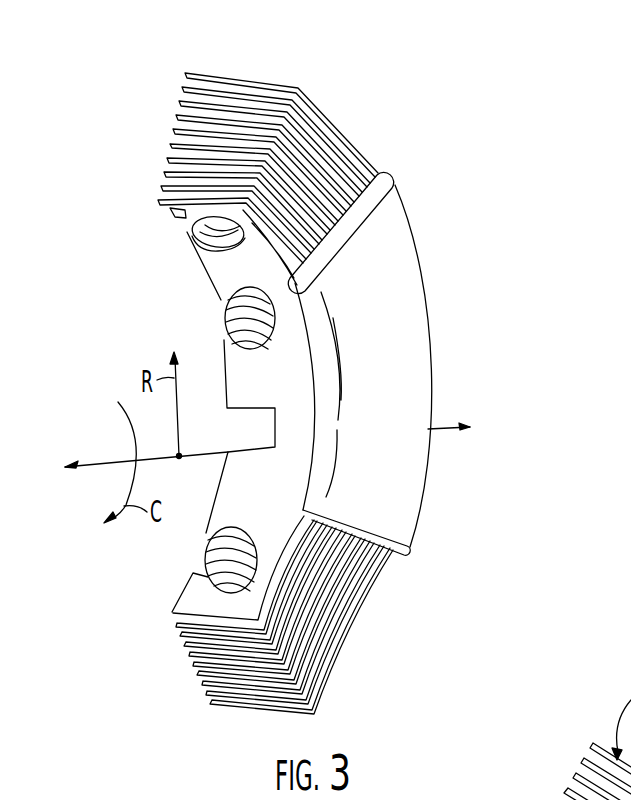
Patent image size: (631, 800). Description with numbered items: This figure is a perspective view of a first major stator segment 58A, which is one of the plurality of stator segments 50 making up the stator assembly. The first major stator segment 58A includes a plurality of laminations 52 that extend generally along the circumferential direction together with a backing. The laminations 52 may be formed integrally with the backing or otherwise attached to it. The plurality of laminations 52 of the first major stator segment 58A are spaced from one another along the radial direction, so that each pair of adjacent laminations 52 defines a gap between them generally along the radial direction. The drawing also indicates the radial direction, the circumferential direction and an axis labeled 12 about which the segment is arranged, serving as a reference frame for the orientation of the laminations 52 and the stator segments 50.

The laminations 52 is at (212, 75).
The stator segments 50 is at (359, 284).
The first major stator segment 58A is at (407, 50).
The axis A (center axis) 12 is at (107, 458).